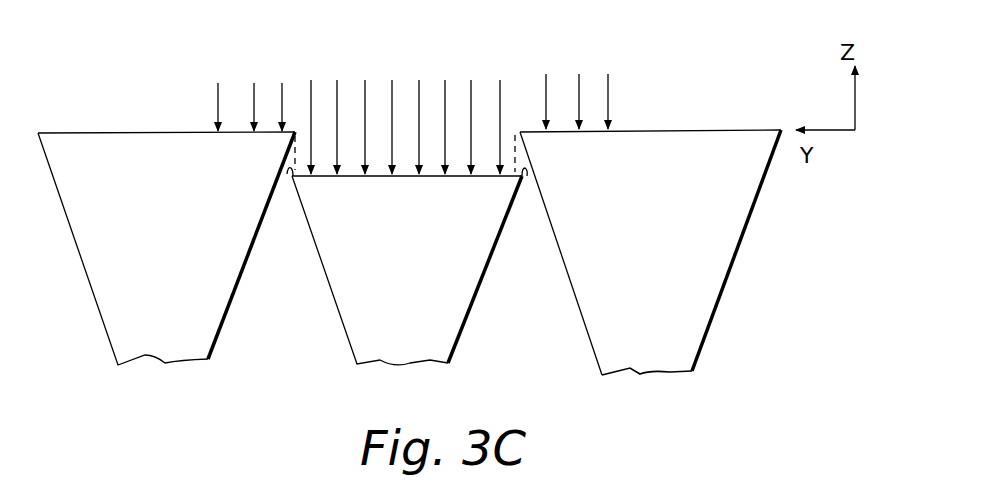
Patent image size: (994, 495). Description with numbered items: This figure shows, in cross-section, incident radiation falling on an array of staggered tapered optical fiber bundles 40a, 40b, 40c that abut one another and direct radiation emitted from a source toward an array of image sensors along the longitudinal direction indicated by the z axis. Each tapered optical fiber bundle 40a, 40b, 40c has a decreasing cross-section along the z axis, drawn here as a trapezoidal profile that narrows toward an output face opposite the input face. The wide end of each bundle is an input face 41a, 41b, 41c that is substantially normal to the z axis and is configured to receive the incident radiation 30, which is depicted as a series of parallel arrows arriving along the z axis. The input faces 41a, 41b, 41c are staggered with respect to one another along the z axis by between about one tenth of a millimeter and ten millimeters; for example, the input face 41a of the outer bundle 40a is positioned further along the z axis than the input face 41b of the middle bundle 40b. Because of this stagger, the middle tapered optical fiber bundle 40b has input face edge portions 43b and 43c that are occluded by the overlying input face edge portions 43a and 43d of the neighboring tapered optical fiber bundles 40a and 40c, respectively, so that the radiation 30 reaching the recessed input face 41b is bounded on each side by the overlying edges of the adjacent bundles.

The incident radiation 30 is at (222, 71).
The tapered optical fiber bundle 40a is at (211, 305).
The tapered optical fiber bundle 40b is at (452, 320).
The tapered optical fiber bundle 40c is at (716, 260).
The input face 41a is at (140, 133).
The input face 41b is at (428, 175).
The input face 41c is at (695, 130).
The input face edge portion 43a is at (292, 135).
The input face edge portion 43b is at (287, 174).
The input face edge portion 43c is at (527, 176).
The input face edge portion 43d is at (522, 130).